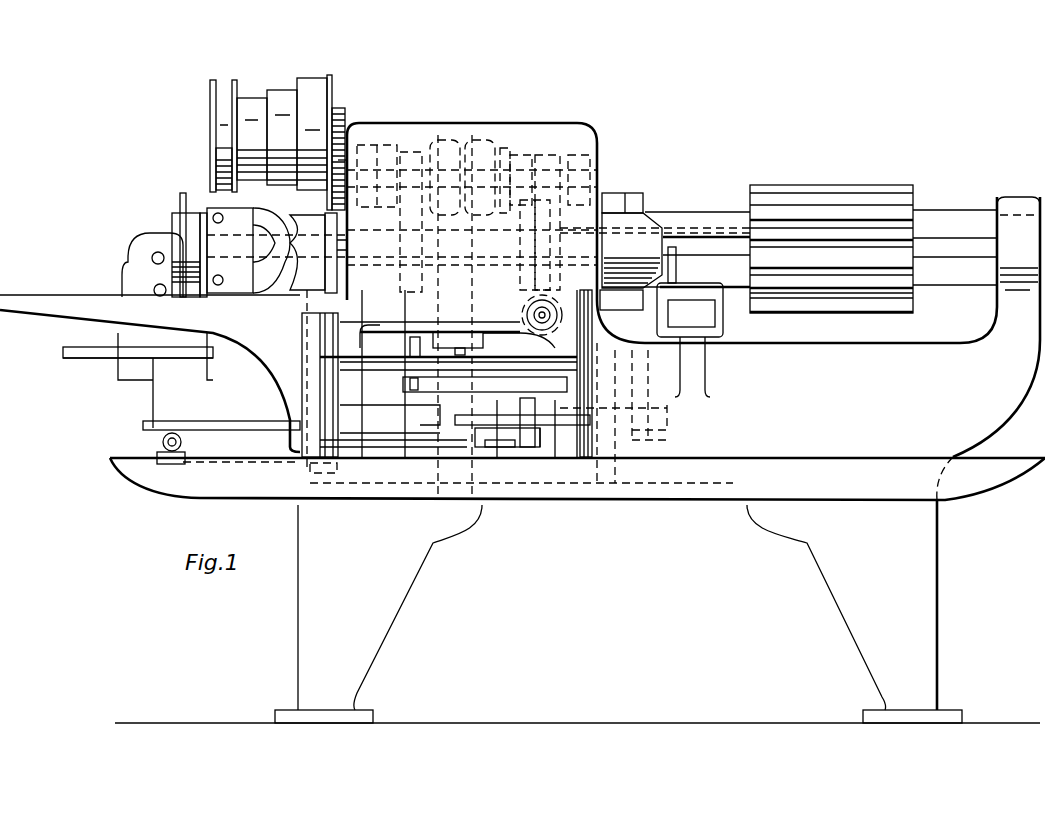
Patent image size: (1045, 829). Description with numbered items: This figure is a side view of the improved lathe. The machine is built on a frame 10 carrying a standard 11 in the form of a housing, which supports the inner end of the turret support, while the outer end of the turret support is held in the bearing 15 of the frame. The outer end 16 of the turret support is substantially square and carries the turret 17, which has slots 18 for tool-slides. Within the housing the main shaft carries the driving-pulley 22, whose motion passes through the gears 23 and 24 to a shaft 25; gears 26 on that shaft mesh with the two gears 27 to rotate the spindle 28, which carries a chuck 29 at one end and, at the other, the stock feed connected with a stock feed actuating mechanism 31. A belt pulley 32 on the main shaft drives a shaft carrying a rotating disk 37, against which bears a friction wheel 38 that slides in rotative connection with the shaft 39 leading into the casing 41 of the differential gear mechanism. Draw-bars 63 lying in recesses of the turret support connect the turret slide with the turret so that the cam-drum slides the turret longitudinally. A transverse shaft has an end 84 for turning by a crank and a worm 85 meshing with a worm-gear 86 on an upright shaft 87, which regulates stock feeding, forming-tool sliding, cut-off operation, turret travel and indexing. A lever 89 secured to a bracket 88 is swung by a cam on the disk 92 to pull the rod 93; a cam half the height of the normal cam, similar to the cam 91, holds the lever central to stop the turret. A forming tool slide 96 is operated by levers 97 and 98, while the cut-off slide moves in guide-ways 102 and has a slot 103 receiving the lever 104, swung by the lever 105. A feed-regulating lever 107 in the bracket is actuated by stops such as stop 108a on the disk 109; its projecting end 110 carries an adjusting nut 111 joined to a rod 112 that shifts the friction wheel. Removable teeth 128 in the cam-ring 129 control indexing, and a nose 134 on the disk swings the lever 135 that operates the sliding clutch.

The frame 10 is at (922, 585).
The standard 11 is at (592, 135).
The bearing 15 is at (1018, 205).
The outer end of the turret support 16 is at (963, 207).
The turret 17 is at (817, 235).
The slots 18 is at (790, 220).
The driving-pulley 22 is at (278, 92).
The gear 23 is at (340, 112).
The gear 24 is at (345, 162).
The shaft 25 is at (383, 170).
The gears 26 is at (417, 150).
The gears 27 is at (520, 288).
The spindle 28 is at (497, 247).
The chuck 29 is at (655, 233).
The stock feed actuating mechanism 31 is at (160, 407).
The belt pulley 32 is at (223, 88).
The rotating disk 37 is at (177, 200).
The friction wheel 38 is at (140, 245).
The shaft 39 is at (157, 250).
The casing 41 is at (122, 295).
The draw-bars 63 is at (712, 240).
The end of transverse shaft 84 is at (535, 312).
The worm 85 is at (532, 342).
The worm-gear 86 is at (383, 314).
The upright shaft 87 is at (440, 322).
The bracket 88 is at (307, 320).
The lever 89 is at (345, 355).
The cam 91 is at (458, 340).
The disk 92 is at (577, 352).
The rod 93 is at (415, 337).
The forming tool slide 96 is at (718, 325).
The lever 97 is at (592, 270).
The lever 98 is at (428, 393).
The guide-ways 102 is at (650, 443).
The slot 103 is at (662, 405).
The lever 104 is at (603, 418).
The lever 105 is at (483, 413).
The feed-regulating lever 107 is at (407, 385).
The stop 108a is at (400, 432).
The disk 109 is at (407, 432).
The projecting end 110 is at (203, 455).
The adjusting nut 111 is at (163, 443).
The rod 112 is at (182, 428).
The removable teeth 128 is at (650, 215).
The cam-ring 129 is at (615, 202).
The nose 134 is at (503, 438).
The lever 135 is at (540, 433).